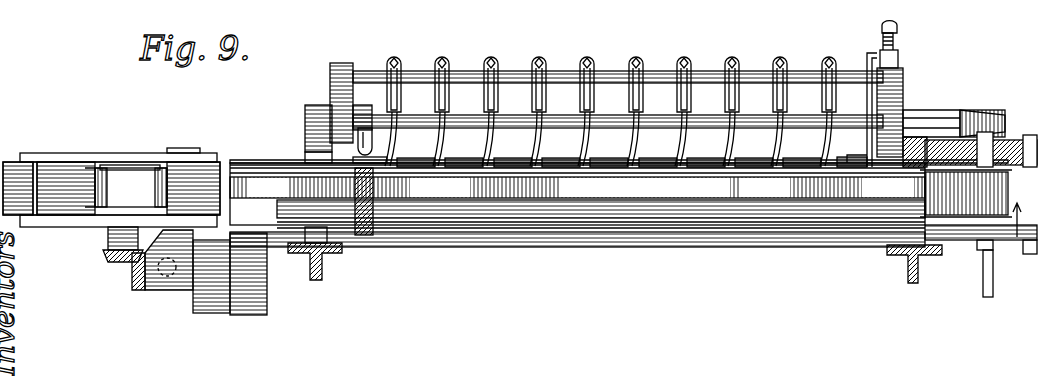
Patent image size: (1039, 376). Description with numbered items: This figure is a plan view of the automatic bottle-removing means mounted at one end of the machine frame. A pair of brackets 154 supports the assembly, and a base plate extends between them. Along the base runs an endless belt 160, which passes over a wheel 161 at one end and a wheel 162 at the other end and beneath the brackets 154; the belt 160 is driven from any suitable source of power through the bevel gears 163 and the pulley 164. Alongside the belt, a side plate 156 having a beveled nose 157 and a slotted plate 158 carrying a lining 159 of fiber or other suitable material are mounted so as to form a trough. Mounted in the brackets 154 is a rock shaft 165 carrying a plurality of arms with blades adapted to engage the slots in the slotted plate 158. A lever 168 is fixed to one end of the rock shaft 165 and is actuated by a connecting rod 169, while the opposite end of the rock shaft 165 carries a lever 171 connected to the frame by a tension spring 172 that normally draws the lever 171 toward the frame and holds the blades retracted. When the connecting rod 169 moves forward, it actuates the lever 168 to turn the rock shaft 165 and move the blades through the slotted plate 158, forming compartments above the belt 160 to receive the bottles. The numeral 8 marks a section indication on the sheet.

The section line indicator 8 is at (1022, 220).
The brackets 154 is at (305, 140).
The side plate 156 is at (760, 226).
The beveled nose 157 is at (640, 205).
The slotted plate 158 is at (514, 165).
The lining 159 is at (420, 163).
The endless belt 160 is at (577, 194).
The wheel 161 is at (125, 167).
The wheel 162 is at (1005, 175).
The bevel gears 163 is at (133, 280).
The pulley 164 is at (218, 310).
The rock shaft 165 is at (465, 115).
The lever 168 is at (972, 110).
The connecting rod 169 is at (993, 282).
The lever 171 is at (375, 148).
The tension spring 172 is at (368, 238).